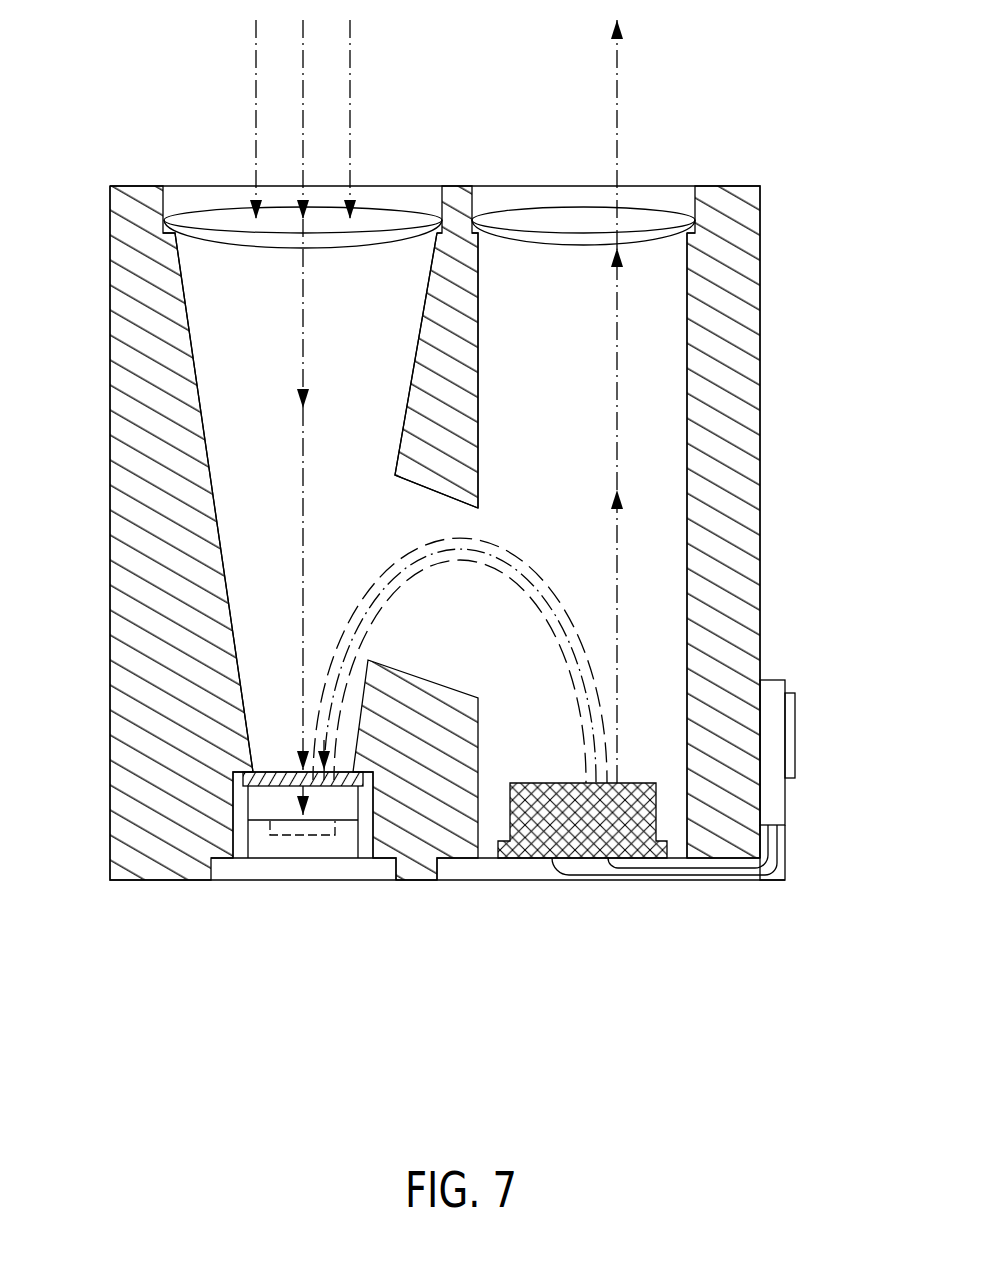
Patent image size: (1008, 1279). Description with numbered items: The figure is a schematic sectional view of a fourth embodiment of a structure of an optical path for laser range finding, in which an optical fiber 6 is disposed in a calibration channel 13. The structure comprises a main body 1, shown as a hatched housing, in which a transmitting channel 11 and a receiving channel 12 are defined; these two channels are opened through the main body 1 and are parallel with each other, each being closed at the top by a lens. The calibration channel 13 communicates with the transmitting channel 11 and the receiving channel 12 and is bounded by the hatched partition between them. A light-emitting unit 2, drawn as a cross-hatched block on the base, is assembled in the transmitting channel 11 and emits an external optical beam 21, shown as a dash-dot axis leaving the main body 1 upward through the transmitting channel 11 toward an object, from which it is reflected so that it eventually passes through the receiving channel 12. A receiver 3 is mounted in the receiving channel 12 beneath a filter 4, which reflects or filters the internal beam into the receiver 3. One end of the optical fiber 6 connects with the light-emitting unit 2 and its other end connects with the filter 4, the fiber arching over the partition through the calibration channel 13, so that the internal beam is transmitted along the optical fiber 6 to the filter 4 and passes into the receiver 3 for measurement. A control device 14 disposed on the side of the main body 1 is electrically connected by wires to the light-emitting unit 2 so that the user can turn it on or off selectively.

The main body 1 is at (745, 323).
The transmitting channel 11 is at (658, 443).
The receiving channel 12 is at (253, 430).
The calibration channel 13 is at (443, 645).
The control device 14 is at (768, 748).
The light-emitting unit 2 is at (540, 835).
The external optical beam 21 is at (617, 543).
The receiver 3 is at (292, 847).
The filter 4 is at (343, 787).
The optical fiber 6 is at (485, 542).